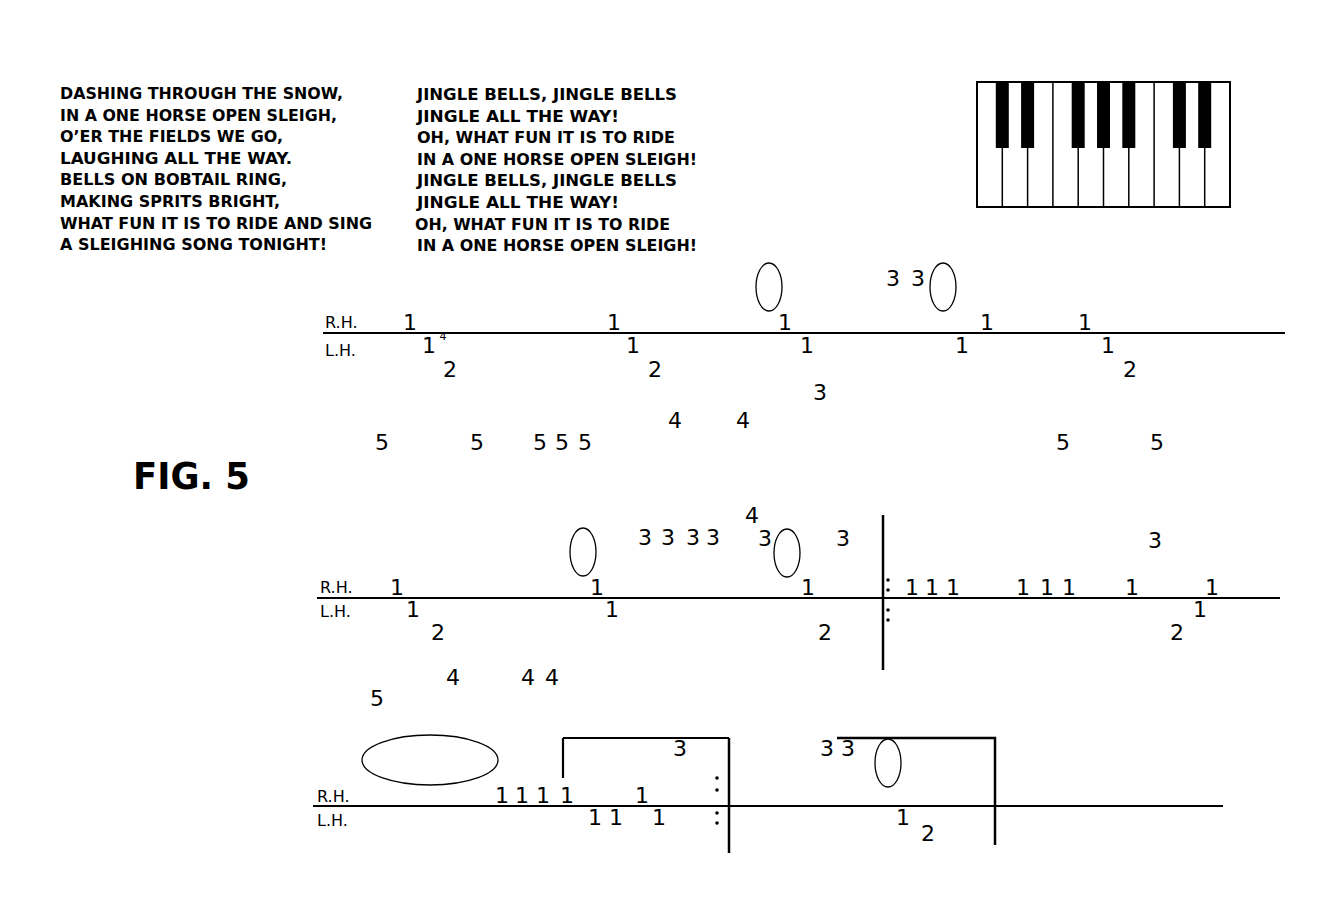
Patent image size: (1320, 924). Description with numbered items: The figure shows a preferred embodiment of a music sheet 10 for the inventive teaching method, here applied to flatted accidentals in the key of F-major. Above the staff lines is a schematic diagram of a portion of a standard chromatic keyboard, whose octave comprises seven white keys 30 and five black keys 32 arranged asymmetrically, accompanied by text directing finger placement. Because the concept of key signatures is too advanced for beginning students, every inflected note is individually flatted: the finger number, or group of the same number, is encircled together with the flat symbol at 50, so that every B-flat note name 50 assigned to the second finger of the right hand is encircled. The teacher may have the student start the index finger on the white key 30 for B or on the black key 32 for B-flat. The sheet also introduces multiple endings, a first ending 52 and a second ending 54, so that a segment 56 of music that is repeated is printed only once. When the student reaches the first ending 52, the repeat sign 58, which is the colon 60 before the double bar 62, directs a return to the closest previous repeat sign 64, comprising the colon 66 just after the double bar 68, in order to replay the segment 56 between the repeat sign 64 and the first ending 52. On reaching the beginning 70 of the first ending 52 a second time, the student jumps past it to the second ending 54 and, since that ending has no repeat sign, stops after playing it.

The music sheet 10 is at (772, 77).
The white key 30 is at (1141, 190).
The black key 32 is at (1125, 100).
The encircled finger number and flat symbol 50 is at (770, 264).
The 1st ending 52 is at (678, 707).
The 2nd ending 54 is at (998, 722).
The segment 56 is at (1221, 560).
The repeat sign 58 is at (736, 785).
The colon 60 is at (702, 834).
The double bar 62 is at (731, 820).
The repeat sign 64 is at (912, 547).
The colon 66 is at (902, 576).
The double bar 68 is at (883, 530).
The beginning of 1st ending 70 is at (562, 762).